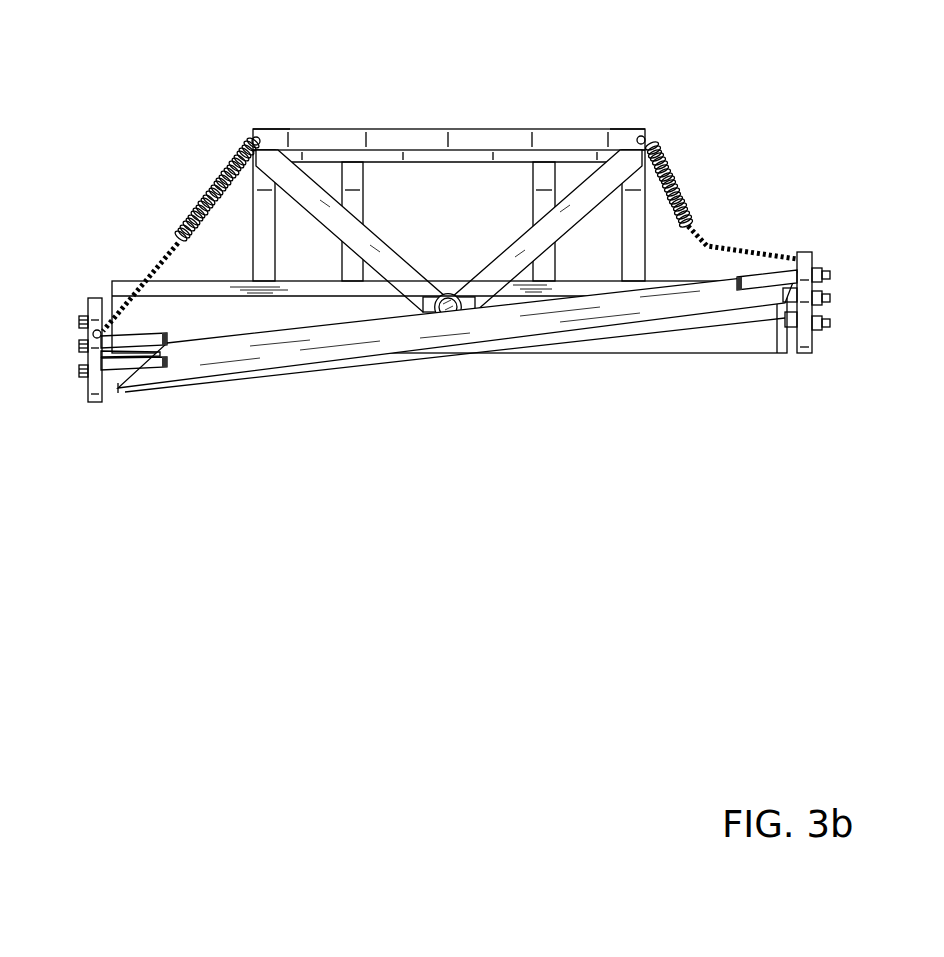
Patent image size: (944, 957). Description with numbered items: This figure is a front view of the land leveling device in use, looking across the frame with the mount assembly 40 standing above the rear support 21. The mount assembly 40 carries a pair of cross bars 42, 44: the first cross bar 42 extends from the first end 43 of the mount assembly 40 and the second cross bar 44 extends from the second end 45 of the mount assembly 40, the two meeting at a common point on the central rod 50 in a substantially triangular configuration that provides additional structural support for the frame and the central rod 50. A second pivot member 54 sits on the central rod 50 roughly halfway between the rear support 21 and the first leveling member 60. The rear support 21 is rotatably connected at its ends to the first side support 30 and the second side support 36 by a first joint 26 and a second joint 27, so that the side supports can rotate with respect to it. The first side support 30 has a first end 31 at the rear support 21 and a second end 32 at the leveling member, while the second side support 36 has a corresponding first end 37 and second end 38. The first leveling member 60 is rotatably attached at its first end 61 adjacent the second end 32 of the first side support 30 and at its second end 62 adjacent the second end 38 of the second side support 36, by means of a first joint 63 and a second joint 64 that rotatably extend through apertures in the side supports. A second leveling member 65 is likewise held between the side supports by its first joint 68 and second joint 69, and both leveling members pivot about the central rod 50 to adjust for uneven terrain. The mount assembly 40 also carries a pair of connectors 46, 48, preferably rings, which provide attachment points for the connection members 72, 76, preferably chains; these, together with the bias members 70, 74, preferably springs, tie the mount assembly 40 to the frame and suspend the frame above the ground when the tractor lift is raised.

The rear support 21 is at (546, 352).
The first joint 26 is at (80, 326).
The second joint 27 is at (822, 323).
The first side support 30 is at (90, 300).
The first end of first side support 31 is at (96, 298).
The second end of first side support 32 is at (98, 403).
The second side support 36 is at (818, 333).
The first end of second side support 37 is at (807, 353).
The second end of second side support 38 is at (806, 252).
The mount assembly 40 is at (473, 136).
The first cross bar 42 is at (377, 246).
The first end of mount assembly 43 is at (257, 129).
The second cross bar 44 is at (518, 242).
The second end of mount assembly 45 is at (623, 140).
The first connector 46 is at (253, 134).
The second connector 48 is at (643, 139).
The central rod 50 is at (453, 316).
The second pivot member 54 is at (440, 322).
The first leveling member 60 is at (297, 362).
The first end of first leveling member 61 is at (122, 390).
The second end of first leveling member 62 is at (774, 325).
The first joint of first leveling member 63 is at (125, 385).
The second joint of first leveling member 64 is at (782, 280).
The second leveling member 65 is at (700, 325).
The first joint of second leveling member 68 is at (80, 345).
The second joint of second leveling member 69 is at (822, 300).
The first bias member 70 is at (232, 162).
The first connection member 72 is at (163, 253).
The second bias member 74 is at (672, 168).
The second connection member 76 is at (707, 245).